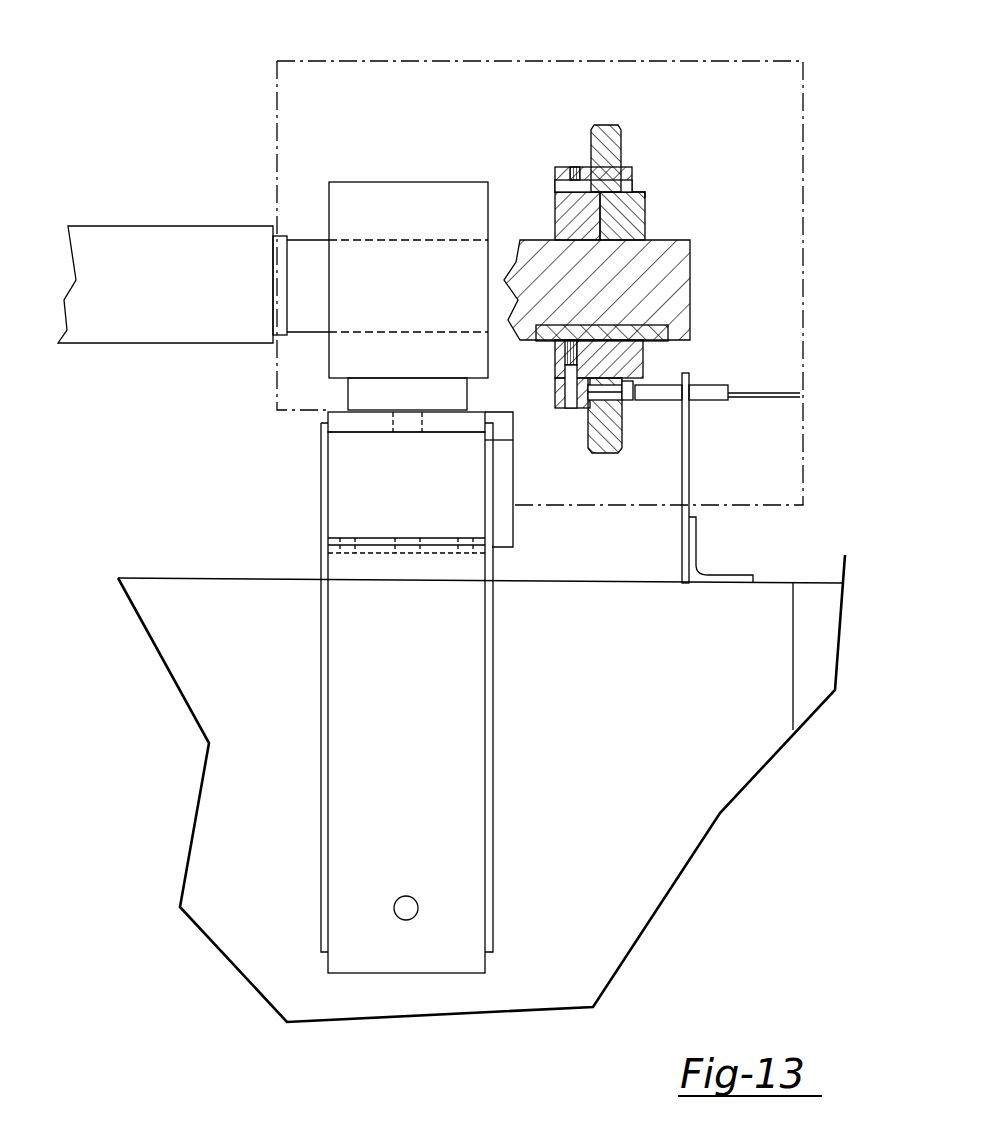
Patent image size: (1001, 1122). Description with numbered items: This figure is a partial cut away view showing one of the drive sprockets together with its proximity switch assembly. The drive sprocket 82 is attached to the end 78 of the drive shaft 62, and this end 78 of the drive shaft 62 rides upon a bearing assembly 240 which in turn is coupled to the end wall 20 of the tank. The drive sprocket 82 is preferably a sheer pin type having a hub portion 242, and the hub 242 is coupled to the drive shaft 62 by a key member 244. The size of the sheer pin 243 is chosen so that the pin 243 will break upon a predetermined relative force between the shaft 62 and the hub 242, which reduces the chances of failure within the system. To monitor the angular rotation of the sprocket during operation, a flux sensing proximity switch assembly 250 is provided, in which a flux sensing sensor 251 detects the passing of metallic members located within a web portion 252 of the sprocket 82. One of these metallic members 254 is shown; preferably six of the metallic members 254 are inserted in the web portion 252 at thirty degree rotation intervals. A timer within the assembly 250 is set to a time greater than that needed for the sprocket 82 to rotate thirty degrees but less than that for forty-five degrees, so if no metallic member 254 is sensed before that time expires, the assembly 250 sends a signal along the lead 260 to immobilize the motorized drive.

The end wall 20 is at (267, 664).
The drive shaft 62 is at (160, 248).
The end of the drive shaft 78 is at (486, 117).
The drive sprocket 82 is at (610, 150).
The bearing assembly 240 is at (298, 462).
The hub portion 242 is at (558, 218).
The sheer pin 243 is at (612, 187).
The key member 244 is at (660, 350).
The proximity switch assembly 250 is at (714, 420).
The flux sensing sensor 251 is at (695, 388).
The web portion 252 is at (607, 418).
The metallic member 254 is at (628, 398).
The lead 260 is at (757, 398).